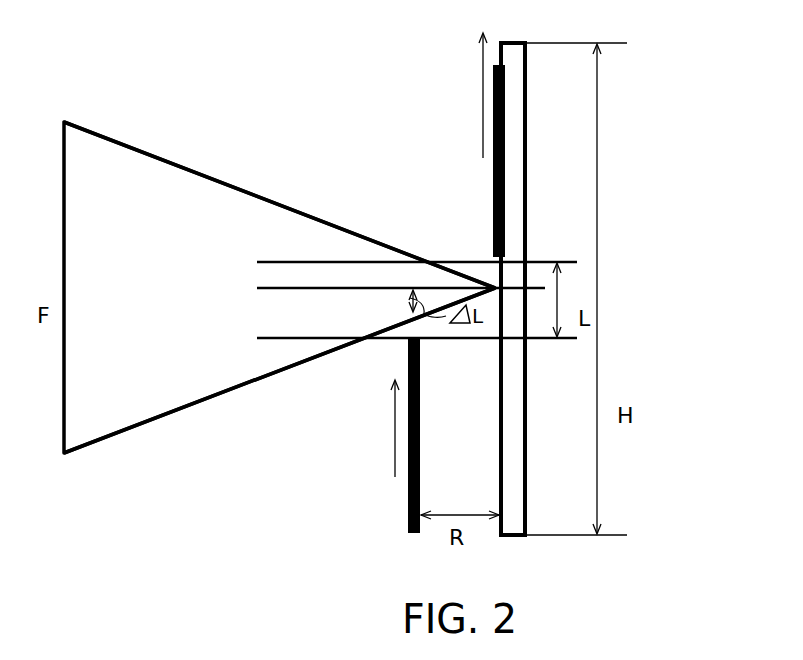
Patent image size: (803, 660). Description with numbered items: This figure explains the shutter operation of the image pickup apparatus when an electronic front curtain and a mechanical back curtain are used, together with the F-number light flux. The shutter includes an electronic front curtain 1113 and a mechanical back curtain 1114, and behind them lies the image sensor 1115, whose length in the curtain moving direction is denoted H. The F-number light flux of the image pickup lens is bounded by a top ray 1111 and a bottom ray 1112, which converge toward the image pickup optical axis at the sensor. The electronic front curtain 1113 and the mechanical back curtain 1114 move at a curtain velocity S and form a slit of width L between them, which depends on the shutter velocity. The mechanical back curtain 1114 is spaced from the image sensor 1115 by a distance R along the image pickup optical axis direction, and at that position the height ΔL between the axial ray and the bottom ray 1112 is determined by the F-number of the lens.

The top ray 1111 is at (203, 173).
The bottom ray 1112 is at (160, 428).
The electronic front curtain 1113 is at (492, 188).
The mechanical back curtain 1114 is at (404, 508).
The image sensor 1115 is at (527, 517).